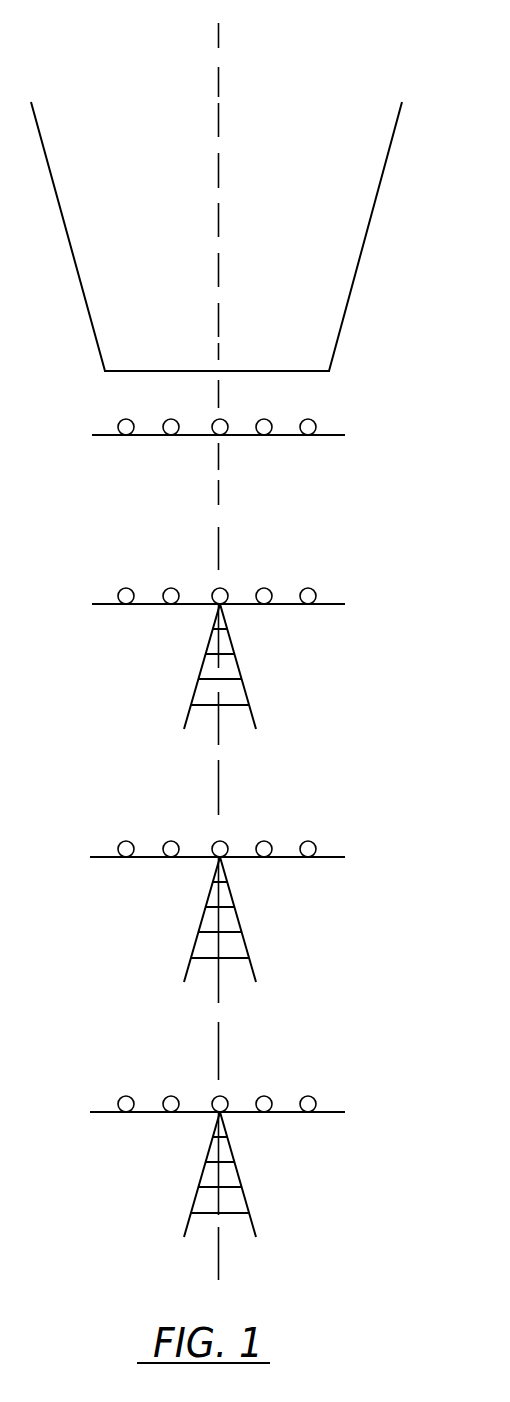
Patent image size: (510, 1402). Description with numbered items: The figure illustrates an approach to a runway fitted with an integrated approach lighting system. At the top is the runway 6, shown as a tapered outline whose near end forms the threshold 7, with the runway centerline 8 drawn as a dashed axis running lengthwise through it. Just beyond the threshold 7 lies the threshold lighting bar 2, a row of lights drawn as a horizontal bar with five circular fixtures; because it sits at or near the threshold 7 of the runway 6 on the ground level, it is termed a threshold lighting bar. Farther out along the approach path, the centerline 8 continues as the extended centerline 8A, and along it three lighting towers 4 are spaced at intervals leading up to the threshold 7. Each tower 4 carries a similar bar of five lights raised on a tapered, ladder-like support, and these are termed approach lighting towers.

The centerline 8 is at (218, 48).
The runway 6 is at (348, 207).
The threshold 7 is at (312, 371).
The threshold lighting bar 2 is at (328, 435).
The lighting towers 4 is at (332, 605).
The extended centerline 8A is at (219, 789).